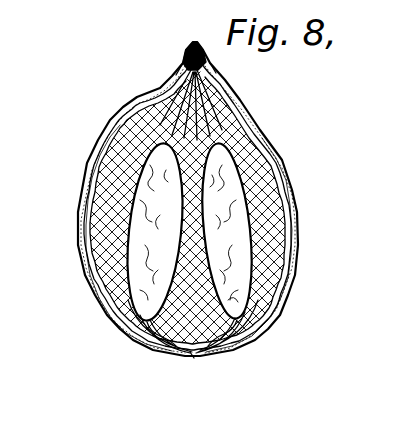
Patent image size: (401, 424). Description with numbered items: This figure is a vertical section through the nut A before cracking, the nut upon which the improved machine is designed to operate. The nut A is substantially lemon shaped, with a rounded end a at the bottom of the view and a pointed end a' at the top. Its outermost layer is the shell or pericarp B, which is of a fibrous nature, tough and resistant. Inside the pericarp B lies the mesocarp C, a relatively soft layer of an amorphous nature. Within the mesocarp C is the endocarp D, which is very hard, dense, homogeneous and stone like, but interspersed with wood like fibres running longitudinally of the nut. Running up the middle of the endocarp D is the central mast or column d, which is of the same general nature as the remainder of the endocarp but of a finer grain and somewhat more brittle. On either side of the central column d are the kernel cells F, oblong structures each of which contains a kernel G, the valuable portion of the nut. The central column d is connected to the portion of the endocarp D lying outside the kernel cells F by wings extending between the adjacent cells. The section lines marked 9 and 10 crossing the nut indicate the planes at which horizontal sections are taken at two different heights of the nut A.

The pointed end a' is at (188, 40).
The rounded end a is at (183, 383).
The nut A is at (289, 176).
The shell or pericarp B is at (188, 199).
The mesocarp C is at (103, 153).
The central column d is at (186, 214).
The kernel G is at (150, 197).
The kernel cells F is at (252, 262).
The endocarp D is at (263, 289).
The section line 9- 9 is at (34, 215).
The section line 10- 10 is at (51, 309).